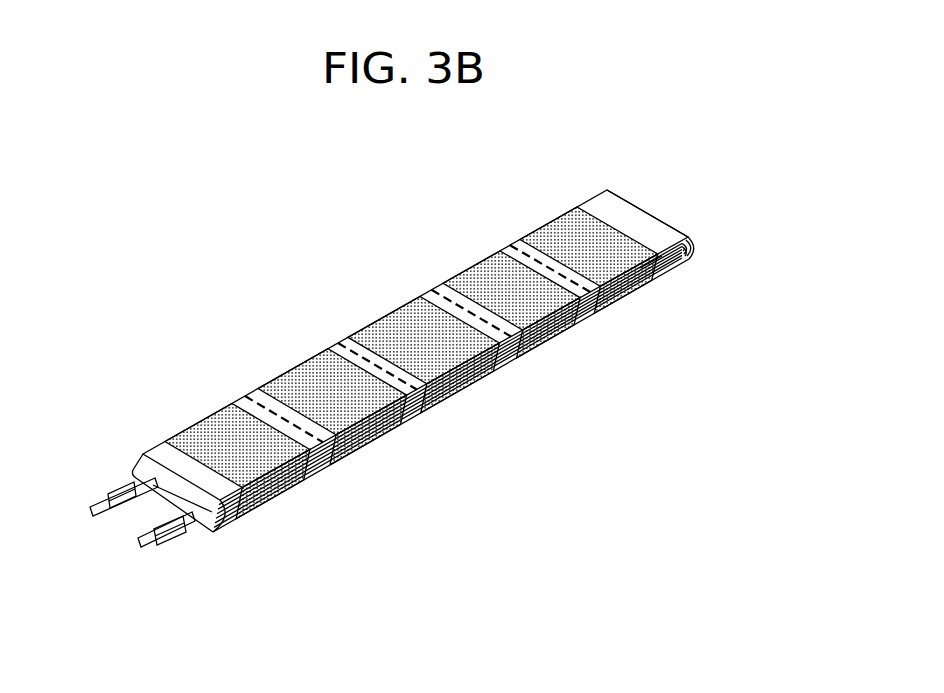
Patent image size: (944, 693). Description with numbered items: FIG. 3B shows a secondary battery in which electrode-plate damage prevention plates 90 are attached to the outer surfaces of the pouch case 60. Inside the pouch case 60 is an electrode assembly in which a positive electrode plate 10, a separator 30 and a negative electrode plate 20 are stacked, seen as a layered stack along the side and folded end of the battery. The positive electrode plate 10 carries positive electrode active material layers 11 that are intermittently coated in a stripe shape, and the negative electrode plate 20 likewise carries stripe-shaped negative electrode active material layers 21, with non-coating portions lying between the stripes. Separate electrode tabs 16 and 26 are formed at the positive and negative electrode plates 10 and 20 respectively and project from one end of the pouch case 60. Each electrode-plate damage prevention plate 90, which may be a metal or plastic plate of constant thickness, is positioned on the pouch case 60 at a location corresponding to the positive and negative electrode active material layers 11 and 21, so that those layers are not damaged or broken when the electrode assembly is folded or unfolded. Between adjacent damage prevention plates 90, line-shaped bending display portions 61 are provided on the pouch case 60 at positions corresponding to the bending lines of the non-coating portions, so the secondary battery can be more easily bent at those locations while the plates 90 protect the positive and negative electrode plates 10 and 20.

The positive electrode plate 10 is at (677, 234).
The positive electrode active material layer 11 is at (632, 290).
The electrode tab 16 is at (102, 522).
The negative electrode plate 20 is at (692, 260).
The negative electrode active material layer 21 is at (650, 286).
The electrode tab 26 is at (155, 560).
The separator 30 is at (694, 246).
The pouch case 60 is at (332, 312).
The bending display portion 61 is at (445, 315).
The electrode-plate damage prevention plate 90 is at (225, 440).